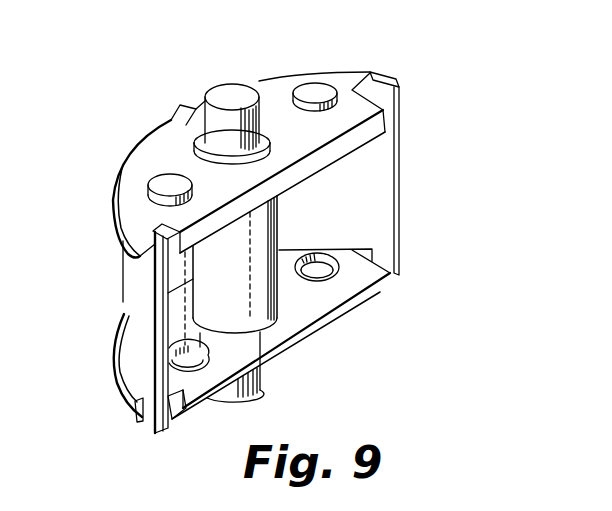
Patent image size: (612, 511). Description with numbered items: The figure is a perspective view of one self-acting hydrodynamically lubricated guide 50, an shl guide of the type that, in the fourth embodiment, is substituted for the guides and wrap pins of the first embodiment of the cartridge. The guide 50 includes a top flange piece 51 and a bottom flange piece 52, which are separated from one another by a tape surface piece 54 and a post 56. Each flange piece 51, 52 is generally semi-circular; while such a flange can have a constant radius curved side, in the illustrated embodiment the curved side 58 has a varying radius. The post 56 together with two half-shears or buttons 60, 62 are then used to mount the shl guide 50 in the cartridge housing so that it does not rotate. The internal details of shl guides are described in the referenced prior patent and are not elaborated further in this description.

The self-acting hydrodynamically lubricated guide 50 is at (425, 78).
The top flange piece 51 is at (277, 90).
The bottom flange piece 52 is at (374, 291).
The tape surface piece 54 is at (144, 301).
The post 56 is at (226, 97).
The curved side 58 is at (115, 237).
The half-shear or button 60 is at (158, 174).
The half-shear or button 62 is at (322, 91).